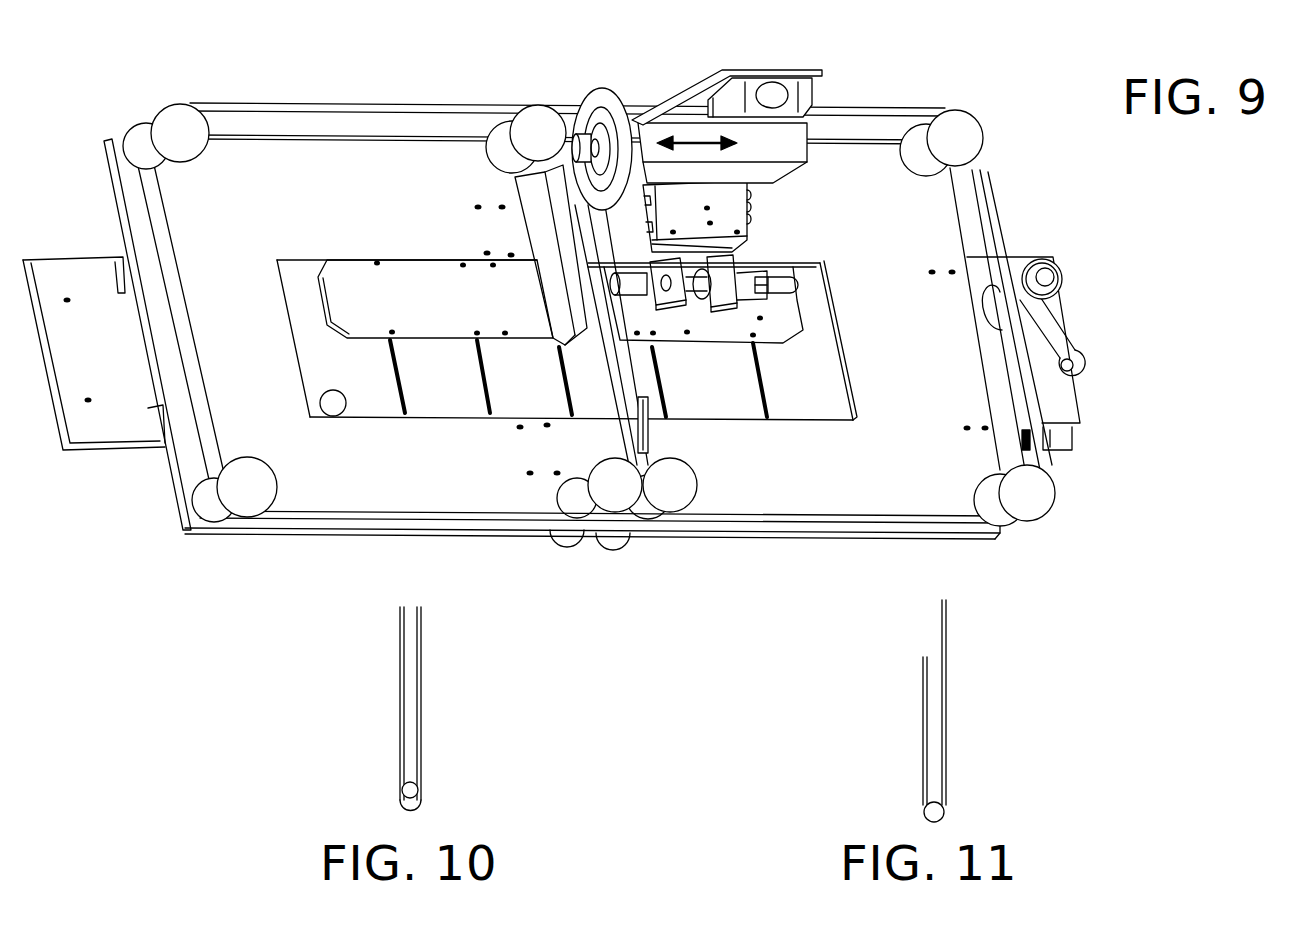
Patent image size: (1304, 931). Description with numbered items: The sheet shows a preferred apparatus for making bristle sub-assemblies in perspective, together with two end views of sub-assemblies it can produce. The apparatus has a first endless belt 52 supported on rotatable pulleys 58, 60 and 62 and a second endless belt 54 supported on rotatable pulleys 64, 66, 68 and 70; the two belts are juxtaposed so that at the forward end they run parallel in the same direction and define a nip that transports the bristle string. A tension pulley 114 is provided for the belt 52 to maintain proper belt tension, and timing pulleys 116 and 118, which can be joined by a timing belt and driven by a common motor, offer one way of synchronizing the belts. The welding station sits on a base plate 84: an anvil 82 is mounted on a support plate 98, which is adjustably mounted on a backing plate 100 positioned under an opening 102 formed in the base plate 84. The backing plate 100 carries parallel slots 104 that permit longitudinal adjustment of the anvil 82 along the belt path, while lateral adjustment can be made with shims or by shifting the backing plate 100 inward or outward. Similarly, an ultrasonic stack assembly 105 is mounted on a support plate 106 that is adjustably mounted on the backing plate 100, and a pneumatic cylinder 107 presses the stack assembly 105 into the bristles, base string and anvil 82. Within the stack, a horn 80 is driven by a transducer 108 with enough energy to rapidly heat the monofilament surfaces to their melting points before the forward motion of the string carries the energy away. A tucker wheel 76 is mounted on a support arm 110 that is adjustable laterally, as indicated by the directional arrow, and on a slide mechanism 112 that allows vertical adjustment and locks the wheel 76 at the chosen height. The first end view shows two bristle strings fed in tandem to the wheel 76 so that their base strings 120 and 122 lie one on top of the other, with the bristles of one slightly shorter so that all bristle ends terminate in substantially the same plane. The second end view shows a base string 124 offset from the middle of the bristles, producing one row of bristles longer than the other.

In FIG. 9, the first endless belt 52 is at (833, 525).
In FIG. 9, the second endless belt 54 is at (302, 100).
In FIG. 9, the rotatable pulley 58 is at (677, 500).
In FIG. 9, the rotatable pulley 60 is at (965, 130).
In FIG. 9, the rotatable pulley 62 is at (1037, 505).
In FIG. 9, the rotatable pulley 64 is at (538, 118).
In FIG. 9, the rotatable pulley 66 is at (172, 118).
In FIG. 9, the rotatable pulley 68 is at (620, 500).
In FIG. 9, the rotatable pulley 70 is at (262, 497).
In FIG. 9, the tucker wheel 76 is at (598, 88).
In FIG. 9, the horn 80 is at (640, 118).
In FIG. 9, the anvil 82 is at (548, 275).
In FIG. 9, the base plate 84 is at (252, 530).
In FIG. 9, the support plate 98 is at (385, 258).
In FIG. 9, the backing plate 100 is at (462, 390).
In FIG. 9, the opening 102 is at (343, 410).
In FIG. 9, the parallel slots 104 is at (462, 475).
In FIG. 9, the ultrasonic stack assembly 105 is at (735, 340).
In FIG. 9, the support plate 106 is at (765, 270).
In FIG. 9, the pneumatic cylinder 107 is at (793, 277).
In FIG. 9, the transducer 108 is at (770, 333).
In FIG. 9, the support arm 110 is at (790, 140).
In FIG. 9, the slide mechanism 112 is at (757, 70).
In FIG. 9, the tension pulley 114 is at (1062, 277).
In FIG. 9, the timing pulley 116 is at (577, 545).
In FIG. 9, the timing pulley 118 is at (627, 535).
In FIG. 10, the base string 120 is at (406, 785).
In FIG. 10, the base string 122 is at (420, 812).
In FIG. 11, the base string 124 is at (945, 808).